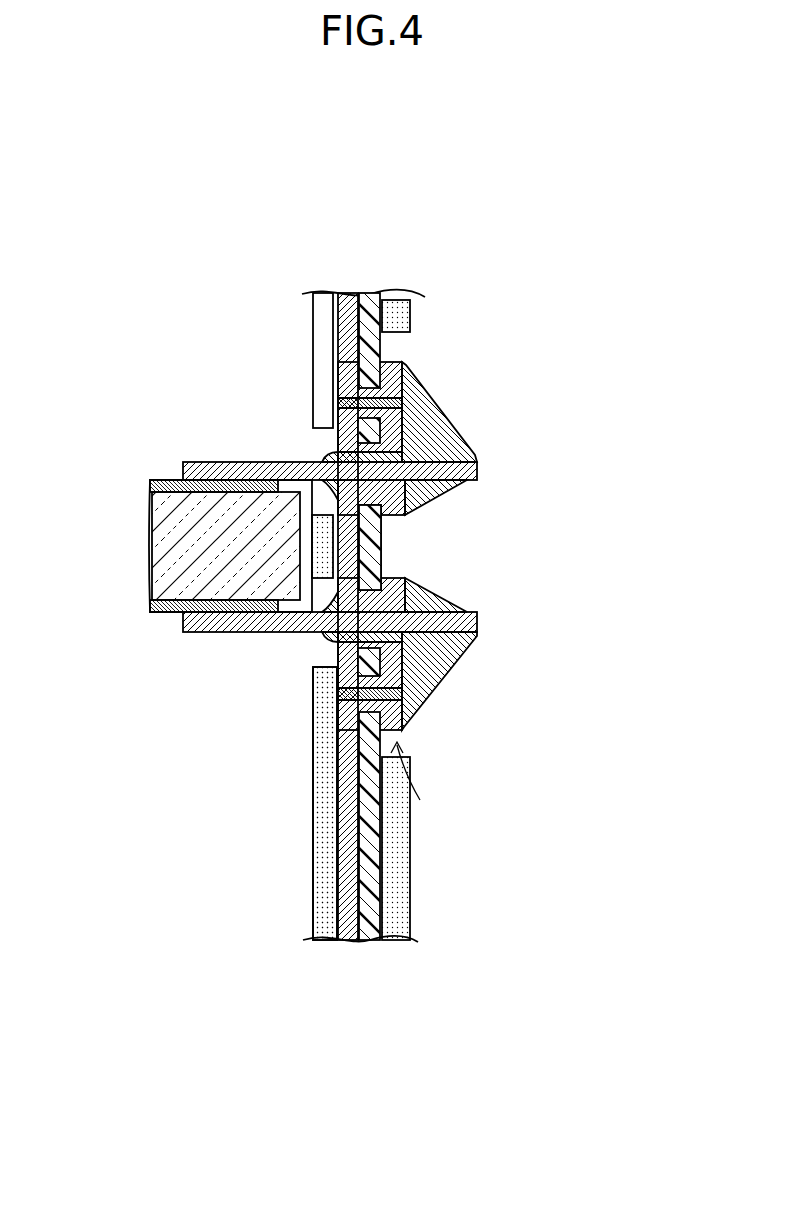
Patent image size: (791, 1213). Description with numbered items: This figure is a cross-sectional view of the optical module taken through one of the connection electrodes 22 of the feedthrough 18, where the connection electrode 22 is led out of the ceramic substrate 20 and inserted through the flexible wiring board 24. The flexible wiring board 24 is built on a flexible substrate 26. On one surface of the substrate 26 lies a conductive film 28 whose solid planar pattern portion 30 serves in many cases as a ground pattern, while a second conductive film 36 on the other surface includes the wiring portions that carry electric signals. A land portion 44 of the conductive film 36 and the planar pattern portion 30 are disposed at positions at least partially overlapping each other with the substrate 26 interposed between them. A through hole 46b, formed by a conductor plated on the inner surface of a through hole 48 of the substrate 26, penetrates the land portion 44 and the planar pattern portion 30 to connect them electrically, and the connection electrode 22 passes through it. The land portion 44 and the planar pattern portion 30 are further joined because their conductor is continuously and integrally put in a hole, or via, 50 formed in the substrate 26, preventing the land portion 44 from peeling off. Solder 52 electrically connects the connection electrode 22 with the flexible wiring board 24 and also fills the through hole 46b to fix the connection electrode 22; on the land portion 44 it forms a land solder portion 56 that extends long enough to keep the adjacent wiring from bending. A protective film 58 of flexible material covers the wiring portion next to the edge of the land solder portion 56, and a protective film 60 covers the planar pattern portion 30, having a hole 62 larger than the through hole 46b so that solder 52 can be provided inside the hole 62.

The feedthrough 18 is at (122, 631).
The ceramic substrate 20 is at (150, 572).
The connection electrodes 22 is at (477, 465).
The flexible wiring board 24 is at (429, 187).
The substrate 26 is at (368, 940).
The conductive film 28 is at (352, 968).
The planar pattern portion 30 is at (345, 323).
The conductive film 36 is at (419, 786).
The land portion 44 is at (398, 427).
The through hole 46b is at (383, 462).
The through hole 48 is at (372, 593).
The hole (via) 50 is at (390, 392).
The solder 52 is at (327, 455).
The land solder portion 56 is at (420, 400).
The protective film 58 is at (400, 850).
The protective film 60 is at (333, 940).
The hole 62 is at (323, 433).